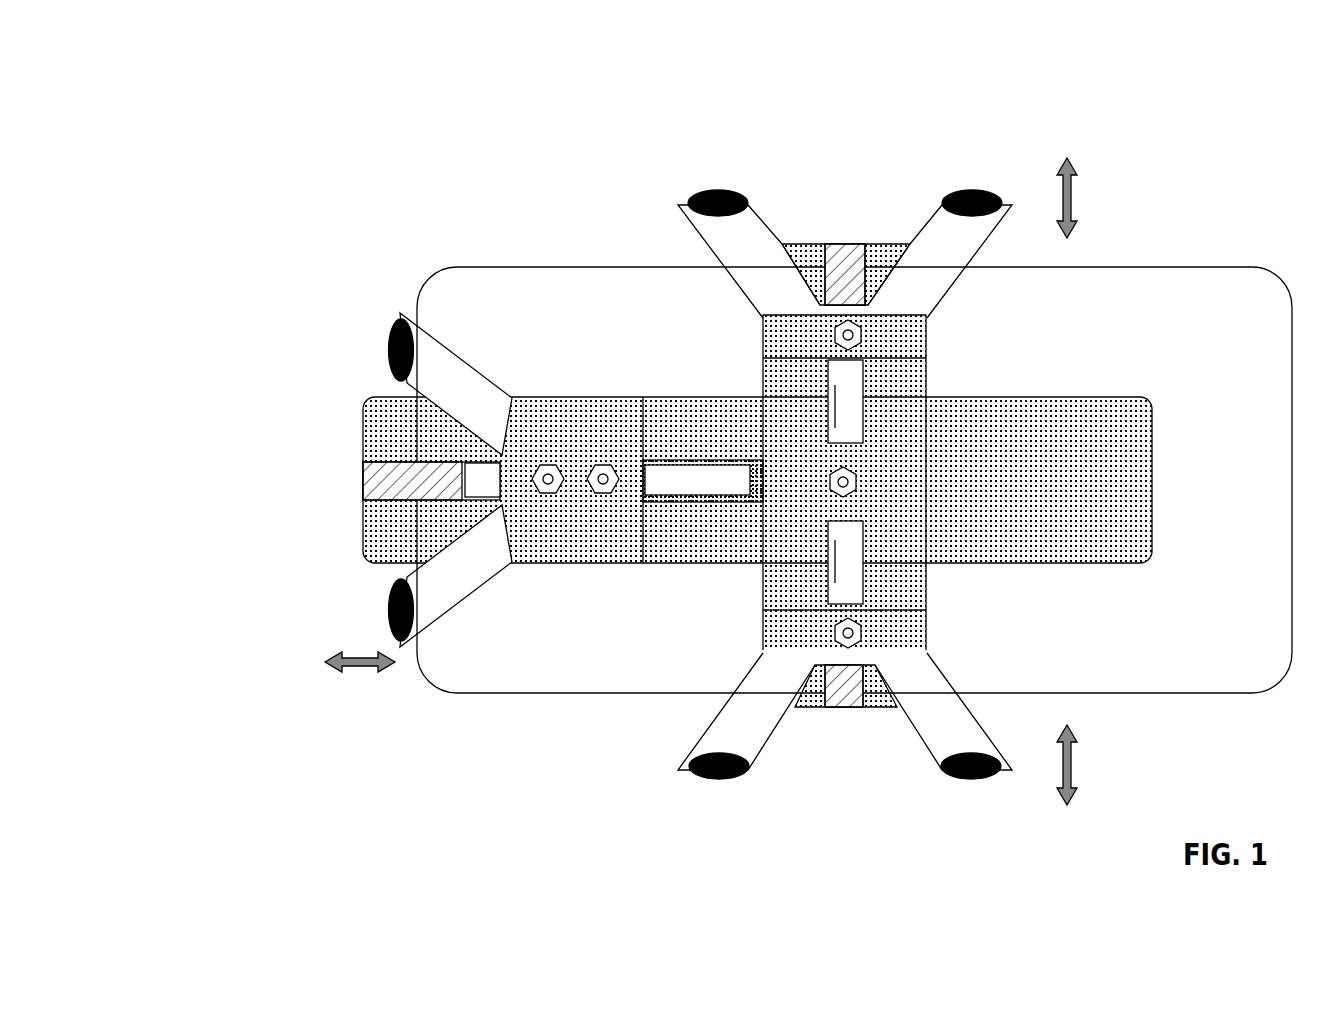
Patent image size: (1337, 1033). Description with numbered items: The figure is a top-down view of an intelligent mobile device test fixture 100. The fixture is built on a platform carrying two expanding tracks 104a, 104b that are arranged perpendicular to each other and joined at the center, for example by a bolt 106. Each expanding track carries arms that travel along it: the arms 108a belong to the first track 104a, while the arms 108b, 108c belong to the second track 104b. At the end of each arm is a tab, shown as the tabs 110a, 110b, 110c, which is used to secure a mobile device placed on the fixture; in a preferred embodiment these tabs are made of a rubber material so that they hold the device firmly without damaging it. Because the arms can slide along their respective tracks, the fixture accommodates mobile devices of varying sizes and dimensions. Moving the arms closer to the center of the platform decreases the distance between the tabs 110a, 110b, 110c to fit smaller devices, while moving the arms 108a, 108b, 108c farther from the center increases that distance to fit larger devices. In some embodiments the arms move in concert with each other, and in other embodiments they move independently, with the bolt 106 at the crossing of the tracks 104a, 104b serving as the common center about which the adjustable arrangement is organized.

The intelligent mobile device test fixture 100 is at (181, 869).
The expanding track 104a is at (332, 455).
The expanding track 104b is at (850, 173).
The bolt 106 is at (850, 486).
The arms 108a is at (697, 480).
The arm 108b is at (845, 401).
The arm 108c is at (845, 562).
The tab 110a is at (332, 434).
The tab 110b is at (940, 798).
The tab 110c is at (845, 174).